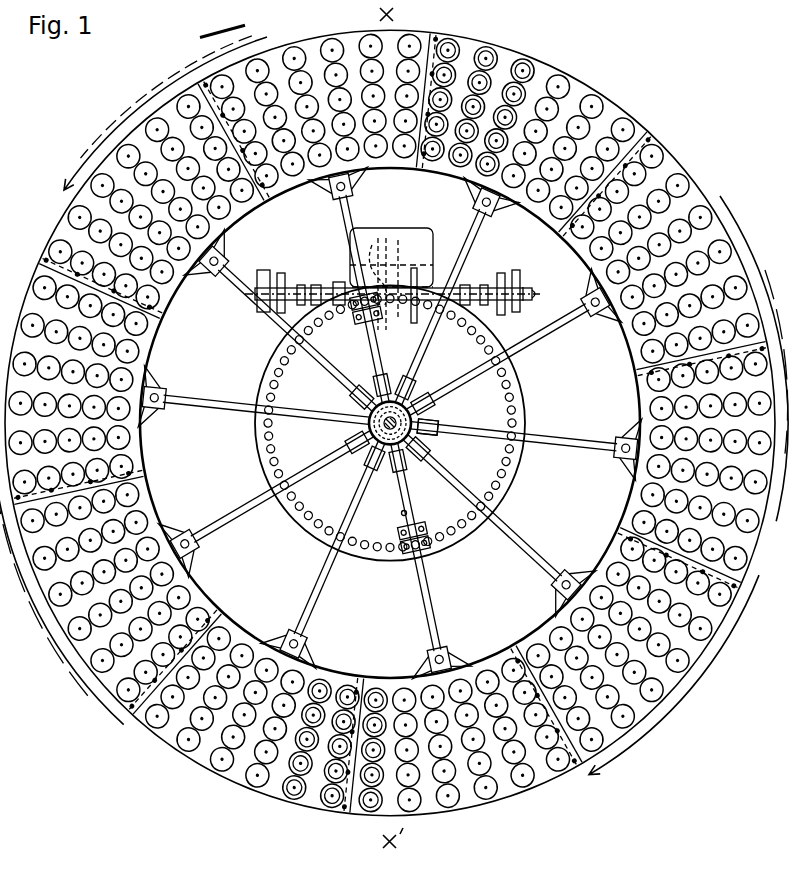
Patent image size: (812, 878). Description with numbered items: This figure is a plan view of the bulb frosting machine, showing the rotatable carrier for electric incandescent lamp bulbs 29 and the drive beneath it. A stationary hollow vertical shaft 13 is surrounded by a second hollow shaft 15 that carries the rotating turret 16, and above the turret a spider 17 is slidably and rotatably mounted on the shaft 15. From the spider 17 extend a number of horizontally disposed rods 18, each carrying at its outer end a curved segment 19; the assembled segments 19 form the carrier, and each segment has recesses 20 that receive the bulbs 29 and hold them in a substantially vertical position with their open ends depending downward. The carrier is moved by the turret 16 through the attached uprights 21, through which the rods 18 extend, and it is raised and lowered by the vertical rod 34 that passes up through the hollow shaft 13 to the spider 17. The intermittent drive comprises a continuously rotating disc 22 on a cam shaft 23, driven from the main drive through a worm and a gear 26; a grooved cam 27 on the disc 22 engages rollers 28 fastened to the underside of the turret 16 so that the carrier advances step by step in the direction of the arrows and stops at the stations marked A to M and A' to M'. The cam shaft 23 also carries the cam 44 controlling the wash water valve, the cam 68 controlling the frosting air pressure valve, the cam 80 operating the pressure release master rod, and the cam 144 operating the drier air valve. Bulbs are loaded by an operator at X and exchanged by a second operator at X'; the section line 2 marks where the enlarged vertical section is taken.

The section line 2— 2 is at (447, 190).
The stationary hollow vertical shaft 13 is at (418, 388).
The hollow shaft 15 is at (388, 377).
The rotating turret 16 is at (473, 541).
The spider 17 is at (343, 432).
The horizontally disposed rods 18 is at (326, 372).
The curved segments 19 is at (628, 346).
The recesses 20 is at (347, 688).
The uprights 21 is at (354, 335).
The continuously rotating disc 22 is at (398, 240).
The cam shaft 23 is at (531, 291).
The gear 26 is at (414, 268).
The grooved cam 27 is at (378, 240).
The rollers 28 is at (294, 513).
The electric incandescent lamp bulbs 29 is at (368, 45).
The vertical rod 34 is at (430, 415).
The cam 44 is at (316, 285).
The cam 68 is at (301, 285).
The cam 80 is at (281, 272).
The cam 144 is at (262, 282).